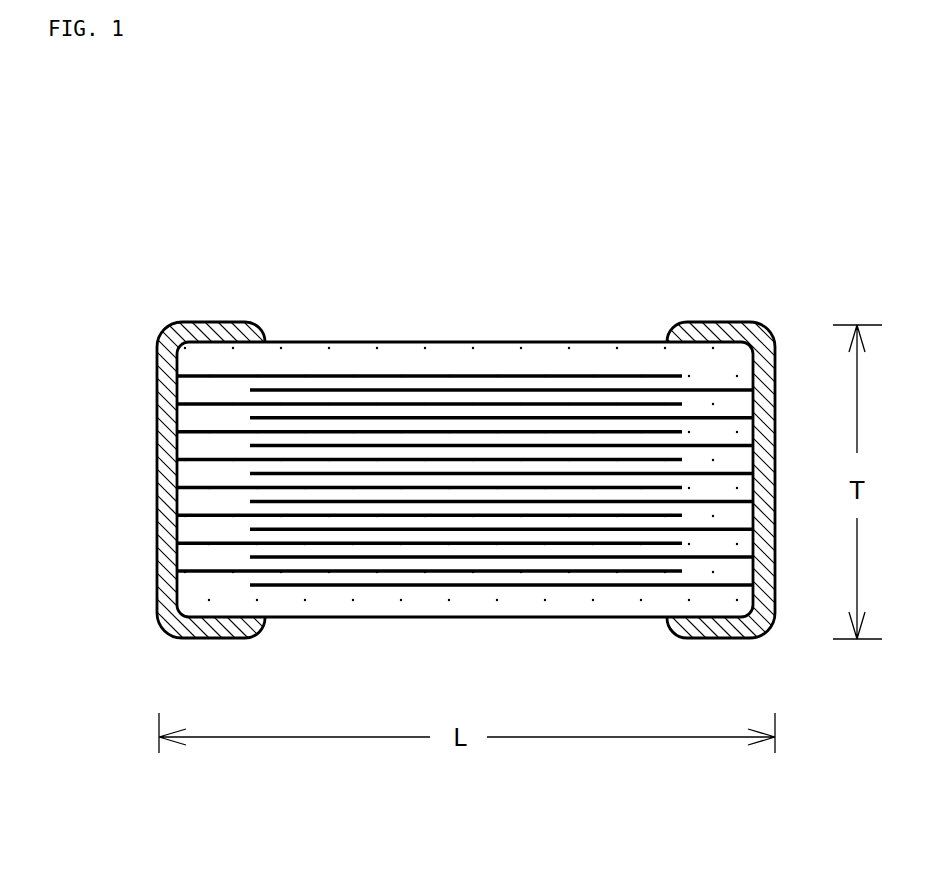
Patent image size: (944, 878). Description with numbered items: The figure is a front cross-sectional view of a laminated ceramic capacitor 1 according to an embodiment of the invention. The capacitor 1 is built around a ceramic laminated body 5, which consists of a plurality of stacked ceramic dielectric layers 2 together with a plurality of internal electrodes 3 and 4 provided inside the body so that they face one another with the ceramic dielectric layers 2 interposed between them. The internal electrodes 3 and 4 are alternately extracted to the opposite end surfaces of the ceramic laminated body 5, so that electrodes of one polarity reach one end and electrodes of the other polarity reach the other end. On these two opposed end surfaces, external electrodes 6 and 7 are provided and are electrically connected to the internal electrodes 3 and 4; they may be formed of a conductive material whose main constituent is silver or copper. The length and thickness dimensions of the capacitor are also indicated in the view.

The laminated ceramic capacitor 1 is at (472, 431).
The ceramic dielectric layer 2 is at (613, 455).
The internal electrode 3 is at (338, 570).
The internal electrode 4 is at (360, 446).
The ceramic laminated body 5 is at (405, 307).
The external electrode 6 is at (157, 473).
The external electrode 7 is at (775, 413).